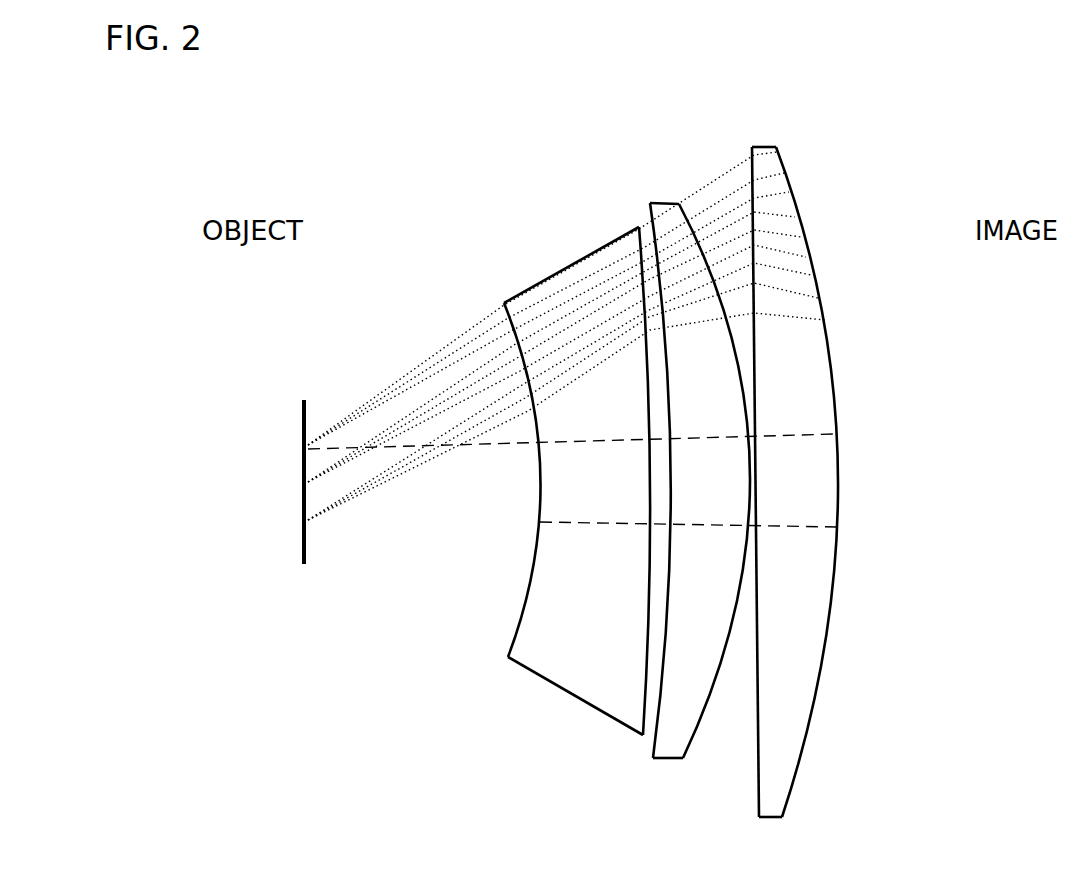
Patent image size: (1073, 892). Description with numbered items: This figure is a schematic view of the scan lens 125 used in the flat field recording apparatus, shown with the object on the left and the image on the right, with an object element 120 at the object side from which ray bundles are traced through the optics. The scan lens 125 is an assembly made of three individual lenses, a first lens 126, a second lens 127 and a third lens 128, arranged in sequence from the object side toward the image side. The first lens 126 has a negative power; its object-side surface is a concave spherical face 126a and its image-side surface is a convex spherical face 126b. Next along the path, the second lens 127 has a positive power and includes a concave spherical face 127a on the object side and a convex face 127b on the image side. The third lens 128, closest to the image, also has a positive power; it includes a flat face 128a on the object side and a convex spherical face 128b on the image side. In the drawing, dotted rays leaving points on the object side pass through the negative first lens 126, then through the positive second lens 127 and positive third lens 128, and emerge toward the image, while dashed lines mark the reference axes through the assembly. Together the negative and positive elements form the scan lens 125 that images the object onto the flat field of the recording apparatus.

The object 120 is at (303, 425).
The scan lens 125 is at (541, 152).
The first lens 126 is at (530, 488).
The concave spherical face 126a is at (519, 625).
The convex spherical face 126b is at (647, 630).
The second lens 127 is at (660, 521).
The concave spherical face 127a is at (653, 740).
The convex face 127b is at (706, 712).
The third lens 128 is at (850, 482).
The flat face 128a is at (758, 640).
The convex spherical face 128b is at (836, 583).